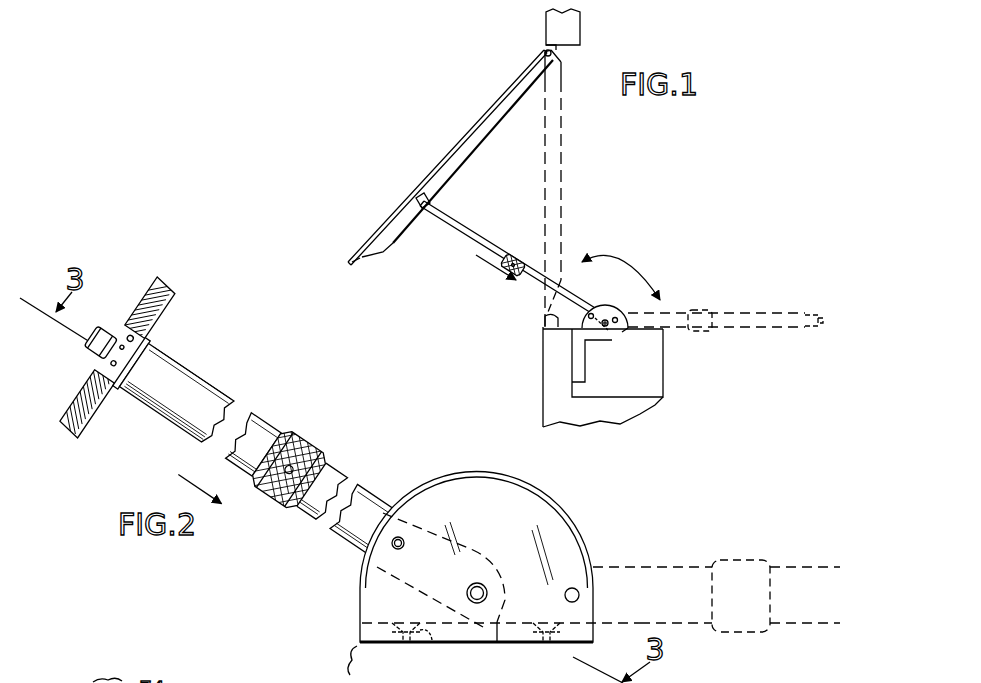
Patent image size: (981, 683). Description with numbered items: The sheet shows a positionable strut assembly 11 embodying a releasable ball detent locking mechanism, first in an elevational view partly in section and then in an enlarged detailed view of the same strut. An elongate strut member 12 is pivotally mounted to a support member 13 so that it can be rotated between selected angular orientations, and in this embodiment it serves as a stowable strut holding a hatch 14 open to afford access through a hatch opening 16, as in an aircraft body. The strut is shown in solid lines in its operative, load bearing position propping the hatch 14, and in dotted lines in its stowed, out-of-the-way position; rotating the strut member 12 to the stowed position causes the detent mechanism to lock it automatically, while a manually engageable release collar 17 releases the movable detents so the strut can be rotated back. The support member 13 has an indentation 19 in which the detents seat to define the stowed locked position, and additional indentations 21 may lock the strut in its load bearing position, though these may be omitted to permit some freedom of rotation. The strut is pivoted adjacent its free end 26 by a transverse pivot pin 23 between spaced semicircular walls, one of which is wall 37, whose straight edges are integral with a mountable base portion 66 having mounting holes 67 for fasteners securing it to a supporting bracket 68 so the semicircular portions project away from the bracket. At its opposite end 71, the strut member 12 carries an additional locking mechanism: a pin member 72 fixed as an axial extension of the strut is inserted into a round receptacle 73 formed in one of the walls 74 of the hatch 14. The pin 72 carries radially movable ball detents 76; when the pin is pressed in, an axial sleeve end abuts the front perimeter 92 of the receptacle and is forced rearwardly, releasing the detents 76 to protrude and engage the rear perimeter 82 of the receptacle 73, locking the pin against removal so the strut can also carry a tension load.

In FIG. 1, the positionable strut assembly 11 is at (586, 238).
In FIG. 2, the positionable strut assembly 11 is at (330, 582).
In FIG. 1, the elongate strut member 12 is at (459, 240).
In FIG. 1, the support member 13 is at (609, 333).
In FIG. 2, the support member 13 is at (363, 664).
In FIG. 1, the hatch 14 is at (437, 165).
In FIG. 1, the hatch opening 16 is at (545, 322).
In FIG. 1, the release collar 17 is at (703, 333).
In FIG. 2, the release collar 17 is at (313, 440).
In FIG. 2, the indentation 19 is at (576, 590).
In FIG. 2, the indentation 21 is at (400, 538).
In FIG. 2, the transverse pivot pin 23 is at (474, 602).
In FIG. 2, the free end 26 is at (495, 612).
In FIG. 2, the spaced parallel wall 37 is at (483, 490).
In FIG. 2, the mountable base portion 66 is at (432, 638).
In FIG. 2, the mounting hole 67 is at (406, 625).
In FIG. 1, the bracket 68 is at (626, 336).
In FIG. 1, the end of strut member 71 is at (423, 212).
In FIG. 2, the end of strut member 71 is at (134, 422).
In FIG. 2, the pin member 72 is at (97, 357).
In FIG. 2, the round receptacle 73 is at (122, 388).
In FIG. 1, the wall of hatch 74 is at (385, 255).
In FIG. 2, the wall of hatch 74 is at (170, 286).
In FIG. 2, the ball detent 76 is at (120, 352).
In FIG. 2, the rear perimeter 82 is at (108, 376).
In FIG. 2, the front perimeter 92 is at (152, 348).